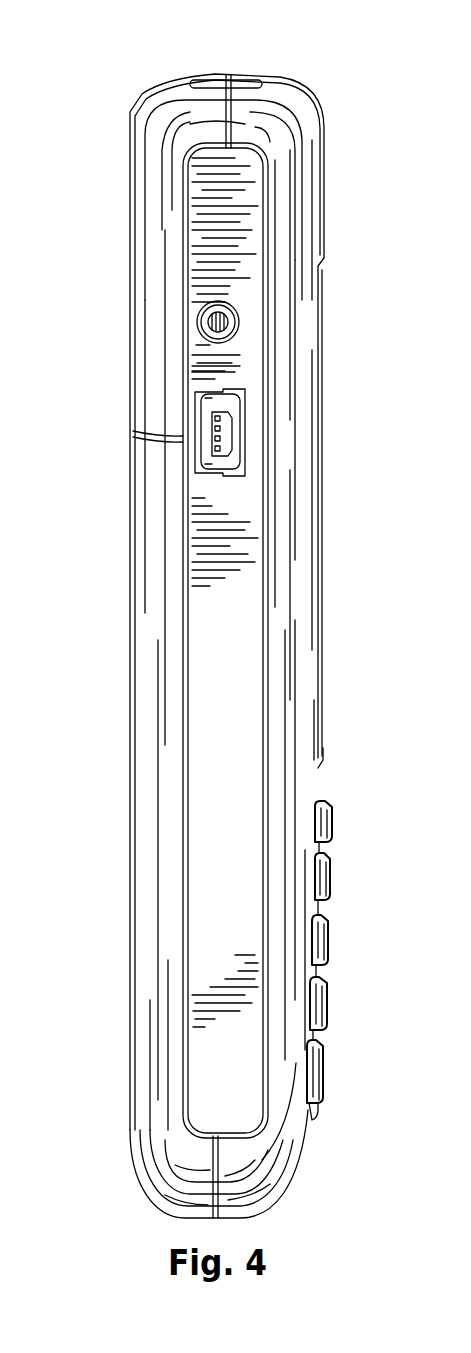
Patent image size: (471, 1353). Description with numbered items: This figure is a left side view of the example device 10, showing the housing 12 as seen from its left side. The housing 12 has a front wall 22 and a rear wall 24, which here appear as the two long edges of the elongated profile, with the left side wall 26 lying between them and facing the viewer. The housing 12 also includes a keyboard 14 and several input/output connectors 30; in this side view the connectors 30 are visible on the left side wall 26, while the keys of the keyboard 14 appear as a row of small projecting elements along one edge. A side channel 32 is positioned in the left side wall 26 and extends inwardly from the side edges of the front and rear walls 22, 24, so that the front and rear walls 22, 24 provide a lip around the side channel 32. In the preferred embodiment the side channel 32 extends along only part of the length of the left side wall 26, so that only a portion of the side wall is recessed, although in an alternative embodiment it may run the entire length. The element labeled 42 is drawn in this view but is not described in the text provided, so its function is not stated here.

The device 10 is at (232, 616).
The housing 12 is at (206, 616).
The keyboard 14 is at (325, 875).
The front wall 22 is at (307, 470).
The rear wall 24 is at (128, 502).
The left side wall 26 is at (233, 788).
The input/output connectors 30 is at (230, 322).
The side channel 32 is at (217, 368).
The seam strip 42 is at (192, 74).